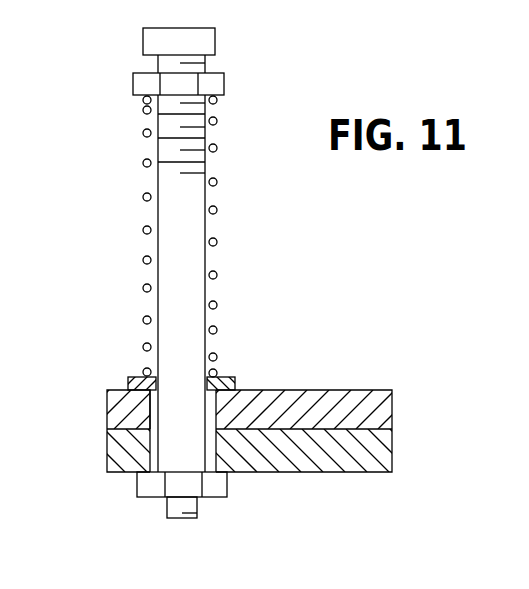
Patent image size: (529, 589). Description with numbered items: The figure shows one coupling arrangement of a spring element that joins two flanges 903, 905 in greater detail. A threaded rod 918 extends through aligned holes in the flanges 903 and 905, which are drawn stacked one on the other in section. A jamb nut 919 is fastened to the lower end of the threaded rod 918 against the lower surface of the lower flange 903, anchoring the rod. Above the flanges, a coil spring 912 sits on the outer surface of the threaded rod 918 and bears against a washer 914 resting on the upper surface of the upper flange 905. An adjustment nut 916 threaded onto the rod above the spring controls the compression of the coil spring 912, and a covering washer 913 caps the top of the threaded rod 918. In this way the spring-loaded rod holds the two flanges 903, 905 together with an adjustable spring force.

The flange 903 is at (115, 455).
The flange 905 is at (112, 412).
The coil spring 912 is at (217, 209).
The covering washer 913 is at (216, 44).
The washer 914 is at (232, 384).
The adjustment nut 916 is at (135, 82).
The threaded rod 918 is at (199, 288).
The jamb nut 919 is at (150, 493).